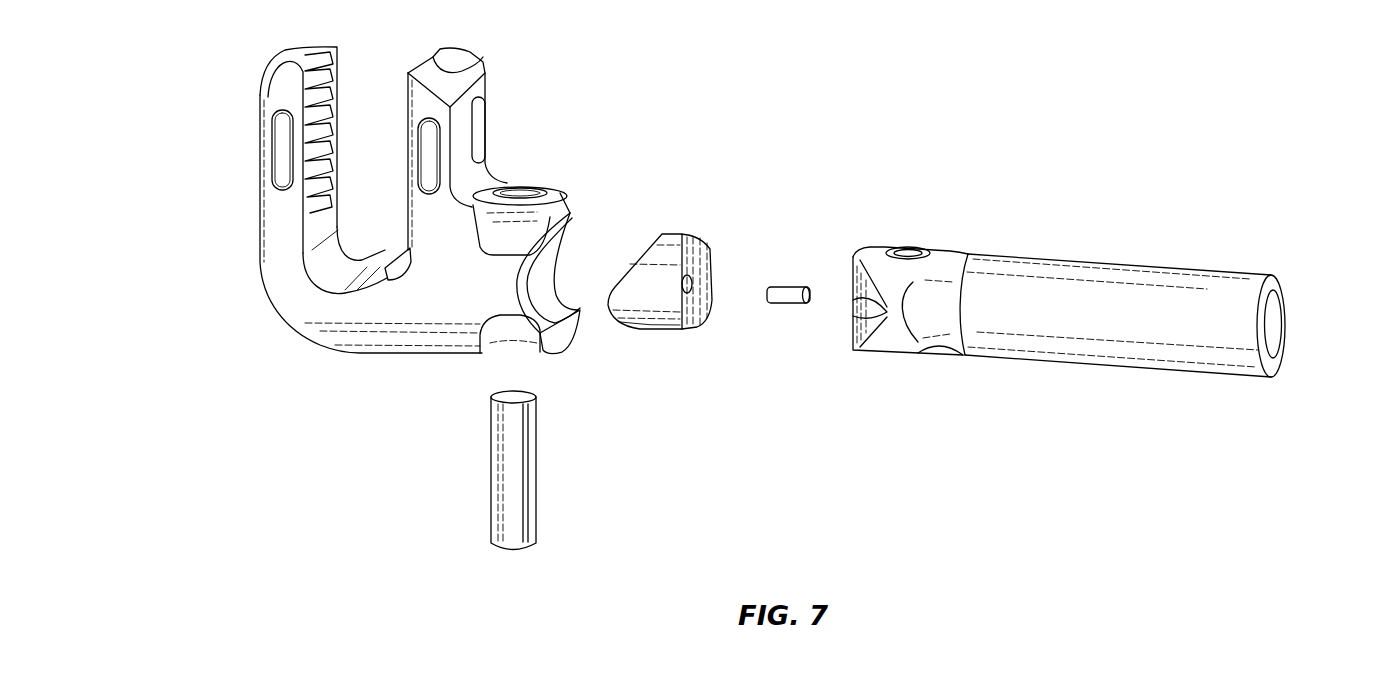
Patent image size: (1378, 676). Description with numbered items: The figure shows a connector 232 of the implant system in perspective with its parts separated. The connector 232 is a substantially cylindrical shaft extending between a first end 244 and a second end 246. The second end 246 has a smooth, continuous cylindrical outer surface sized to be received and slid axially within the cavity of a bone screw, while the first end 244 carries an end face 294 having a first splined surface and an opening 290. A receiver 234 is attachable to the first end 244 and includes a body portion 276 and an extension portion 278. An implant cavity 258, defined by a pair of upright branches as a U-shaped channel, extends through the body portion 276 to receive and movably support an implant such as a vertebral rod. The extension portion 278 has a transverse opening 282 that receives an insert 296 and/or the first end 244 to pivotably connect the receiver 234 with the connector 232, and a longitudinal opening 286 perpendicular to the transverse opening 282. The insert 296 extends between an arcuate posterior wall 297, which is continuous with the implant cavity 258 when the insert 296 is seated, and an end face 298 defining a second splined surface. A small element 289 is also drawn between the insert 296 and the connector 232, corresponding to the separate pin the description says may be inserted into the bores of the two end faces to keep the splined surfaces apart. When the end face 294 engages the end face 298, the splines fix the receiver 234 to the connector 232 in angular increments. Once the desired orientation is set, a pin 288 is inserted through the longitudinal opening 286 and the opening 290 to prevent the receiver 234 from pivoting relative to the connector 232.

The connector 232 is at (1160, 205).
The receiver 234 is at (383, 200).
The first end 244 is at (923, 338).
The second end 246 is at (1276, 317).
The implant cavity 258 is at (369, 229).
The body portion 276 is at (322, 343).
The extension portion 278 is at (550, 366).
The transverse opening 282 is at (565, 242).
The longitudinal opening 286 is at (520, 180).
The pin 288 is at (478, 491).
The small pin 289 is at (791, 330).
The opening 290 is at (904, 235).
The end face 294 is at (851, 272).
The insert 296 is at (703, 213).
The arcuate posterior wall 297 is at (605, 300).
The end face 298 is at (695, 260).